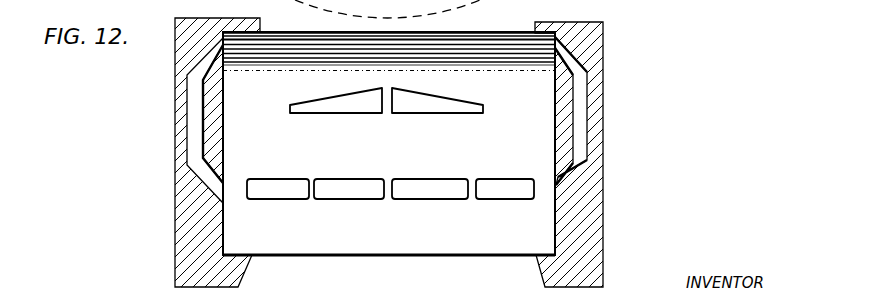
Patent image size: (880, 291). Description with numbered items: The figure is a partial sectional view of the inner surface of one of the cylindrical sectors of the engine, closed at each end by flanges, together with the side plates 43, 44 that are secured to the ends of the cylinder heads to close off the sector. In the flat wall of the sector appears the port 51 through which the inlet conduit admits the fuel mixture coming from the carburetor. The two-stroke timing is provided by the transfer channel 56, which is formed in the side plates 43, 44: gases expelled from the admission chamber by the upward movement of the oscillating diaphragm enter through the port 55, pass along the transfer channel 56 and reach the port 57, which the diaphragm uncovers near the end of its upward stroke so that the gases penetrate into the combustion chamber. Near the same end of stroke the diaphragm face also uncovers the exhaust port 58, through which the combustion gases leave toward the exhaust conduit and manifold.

The side plate 43 is at (181, 203).
The side plate 44 is at (589, 154).
The port 51 is at (342, 111).
The port 55 is at (572, 65).
The transfer channel 56 is at (582, 128).
The port 57 is at (560, 187).
The exhaust port 58 is at (352, 179).